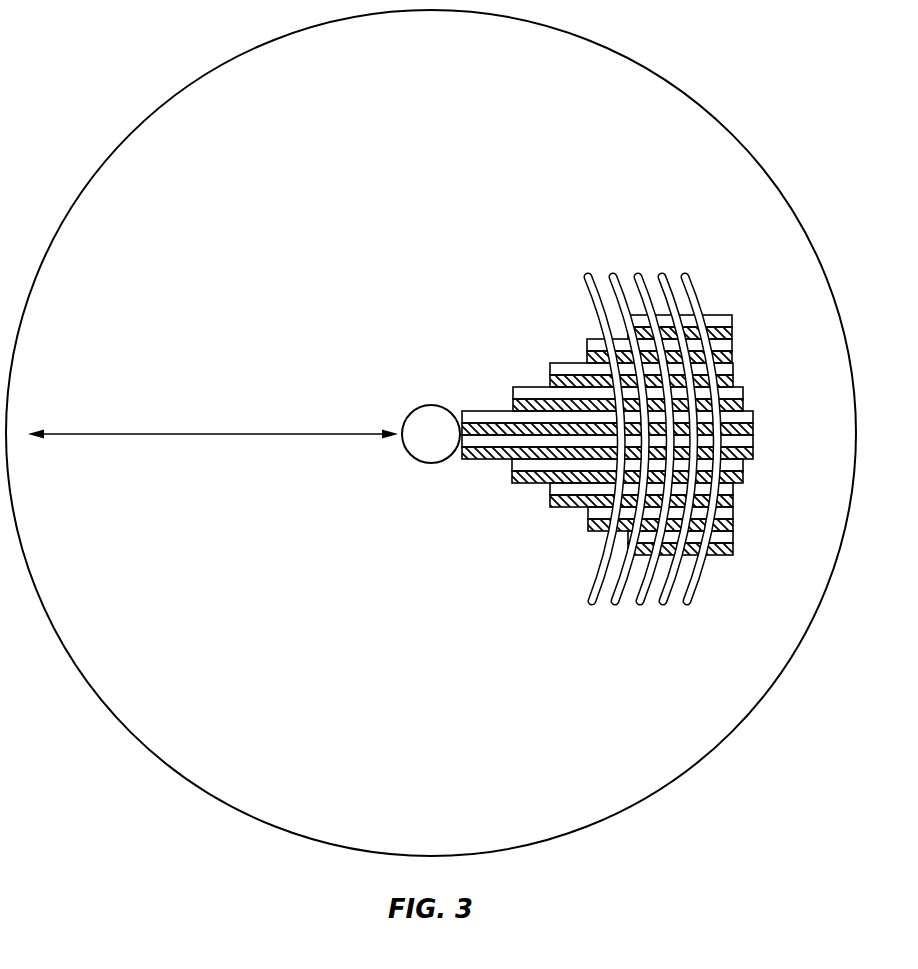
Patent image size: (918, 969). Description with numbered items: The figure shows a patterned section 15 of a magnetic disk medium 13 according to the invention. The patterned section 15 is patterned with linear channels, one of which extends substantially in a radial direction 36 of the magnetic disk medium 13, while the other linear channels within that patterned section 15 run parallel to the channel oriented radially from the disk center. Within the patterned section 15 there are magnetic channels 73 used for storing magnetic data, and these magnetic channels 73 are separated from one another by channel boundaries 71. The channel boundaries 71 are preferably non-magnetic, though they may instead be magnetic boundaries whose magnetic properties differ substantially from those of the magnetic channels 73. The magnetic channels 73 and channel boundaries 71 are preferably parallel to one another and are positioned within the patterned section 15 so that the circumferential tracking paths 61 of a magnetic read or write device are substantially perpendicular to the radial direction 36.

The magnetic disk medium 13 is at (154, 82).
The patterned section 15 is at (610, 386).
The radial direction 36 is at (210, 435).
The circumferential tracking paths 61 is at (586, 270).
The channel boundaries 71 is at (733, 335).
The magnetic channels 73 is at (733, 316).